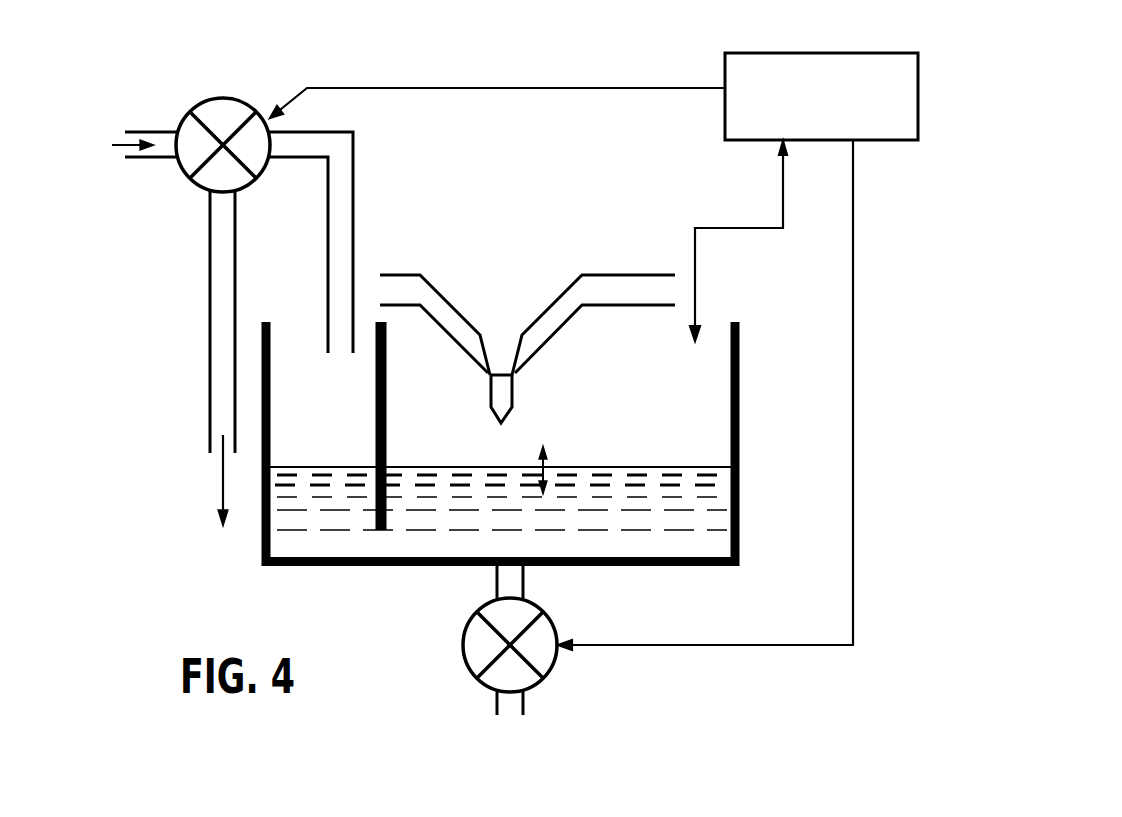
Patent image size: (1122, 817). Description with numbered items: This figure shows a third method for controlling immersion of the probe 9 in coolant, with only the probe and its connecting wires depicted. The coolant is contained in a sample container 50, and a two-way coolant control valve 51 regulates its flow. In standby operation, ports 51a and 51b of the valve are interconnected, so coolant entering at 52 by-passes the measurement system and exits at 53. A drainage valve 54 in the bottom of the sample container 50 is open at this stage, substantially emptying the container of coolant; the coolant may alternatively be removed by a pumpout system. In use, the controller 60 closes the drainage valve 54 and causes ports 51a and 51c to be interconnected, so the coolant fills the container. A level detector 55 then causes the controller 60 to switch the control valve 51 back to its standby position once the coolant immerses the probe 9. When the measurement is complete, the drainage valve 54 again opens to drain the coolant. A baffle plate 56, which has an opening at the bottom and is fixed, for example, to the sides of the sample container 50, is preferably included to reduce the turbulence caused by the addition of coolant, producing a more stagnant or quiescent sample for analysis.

The probe 9 is at (514, 405).
The sample container 50 is at (741, 391).
The two-way coolant control valve 51 is at (212, 97).
The port 51a is at (168, 149).
The port 51b is at (222, 200).
The port 51c is at (283, 145).
The coolant entry 52 is at (108, 148).
The coolant exit 53 is at (185, 480).
The drainage valve 54 is at (462, 652).
The level detector 55 is at (700, 334).
The baffle plate 56 is at (375, 435).
The controller 60 is at (840, 108).